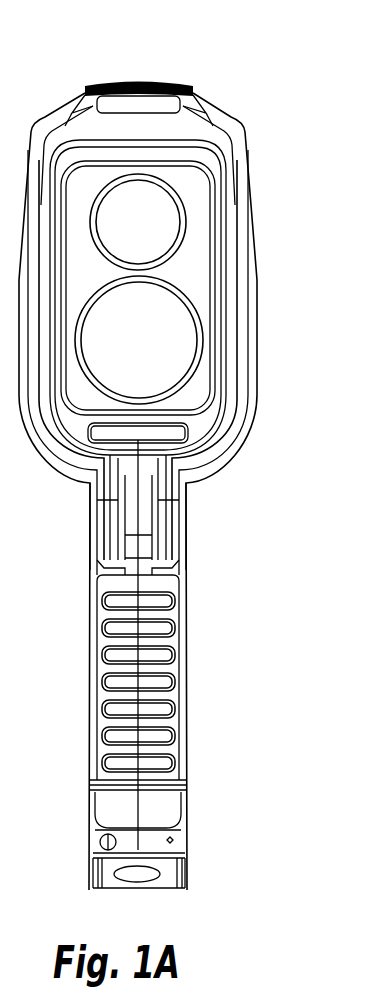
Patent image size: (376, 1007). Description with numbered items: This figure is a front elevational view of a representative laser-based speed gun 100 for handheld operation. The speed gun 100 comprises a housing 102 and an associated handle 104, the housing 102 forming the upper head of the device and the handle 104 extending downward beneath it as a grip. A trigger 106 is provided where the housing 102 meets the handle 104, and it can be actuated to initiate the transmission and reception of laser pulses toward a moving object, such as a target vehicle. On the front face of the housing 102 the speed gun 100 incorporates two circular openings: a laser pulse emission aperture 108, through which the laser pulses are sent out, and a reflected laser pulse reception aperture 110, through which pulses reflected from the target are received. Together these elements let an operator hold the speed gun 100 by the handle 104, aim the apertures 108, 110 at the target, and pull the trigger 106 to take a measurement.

The laser-based speed gun 100 is at (278, 902).
The housing 102 is at (100, 83).
The handle 104 is at (172, 688).
The trigger 106 is at (132, 515).
The laser pulse emission aperture 108 is at (158, 227).
The reflected laser pulse reception aperture 110 is at (158, 345).